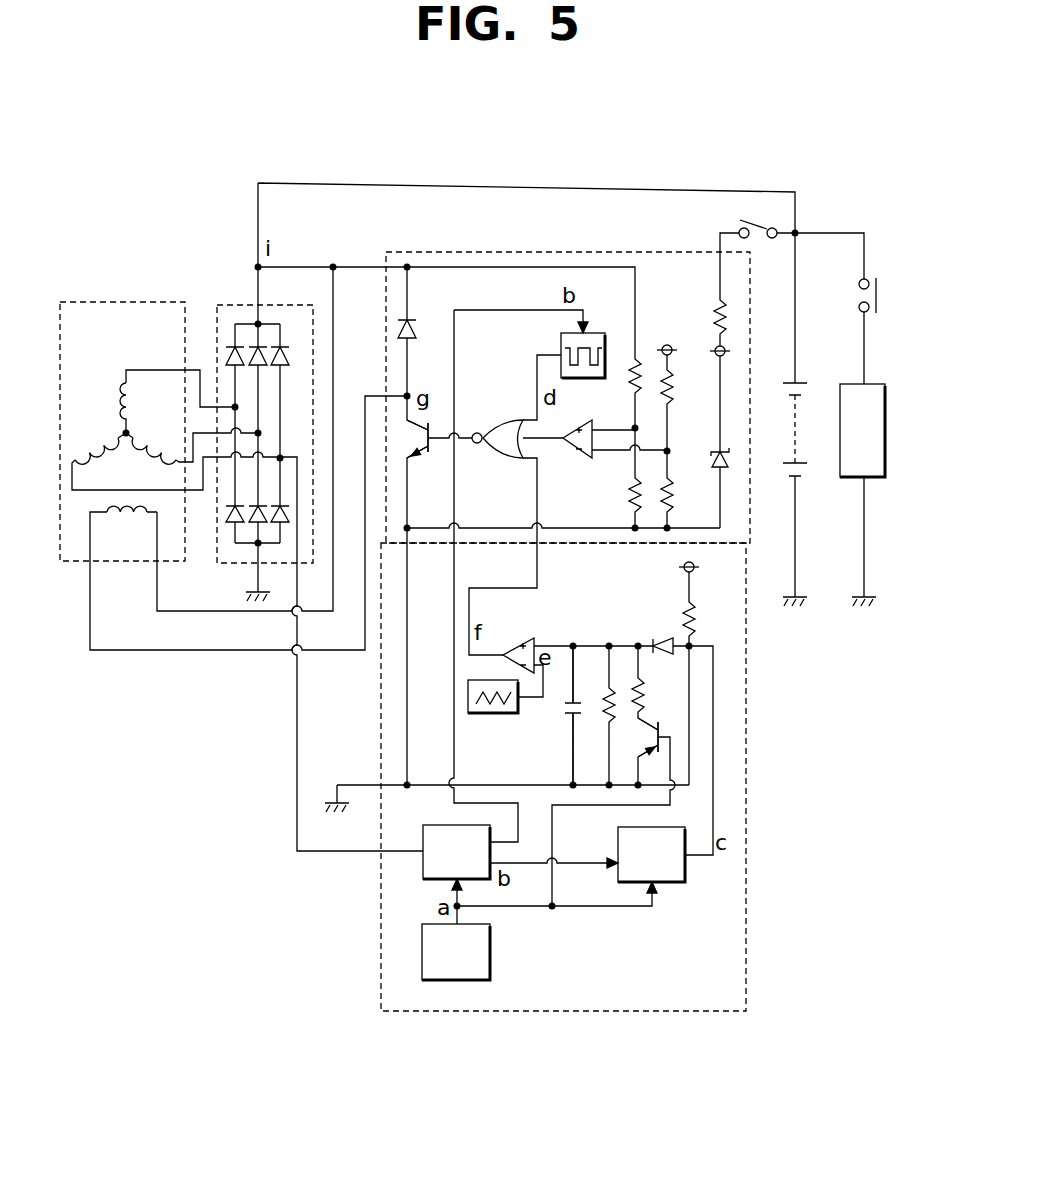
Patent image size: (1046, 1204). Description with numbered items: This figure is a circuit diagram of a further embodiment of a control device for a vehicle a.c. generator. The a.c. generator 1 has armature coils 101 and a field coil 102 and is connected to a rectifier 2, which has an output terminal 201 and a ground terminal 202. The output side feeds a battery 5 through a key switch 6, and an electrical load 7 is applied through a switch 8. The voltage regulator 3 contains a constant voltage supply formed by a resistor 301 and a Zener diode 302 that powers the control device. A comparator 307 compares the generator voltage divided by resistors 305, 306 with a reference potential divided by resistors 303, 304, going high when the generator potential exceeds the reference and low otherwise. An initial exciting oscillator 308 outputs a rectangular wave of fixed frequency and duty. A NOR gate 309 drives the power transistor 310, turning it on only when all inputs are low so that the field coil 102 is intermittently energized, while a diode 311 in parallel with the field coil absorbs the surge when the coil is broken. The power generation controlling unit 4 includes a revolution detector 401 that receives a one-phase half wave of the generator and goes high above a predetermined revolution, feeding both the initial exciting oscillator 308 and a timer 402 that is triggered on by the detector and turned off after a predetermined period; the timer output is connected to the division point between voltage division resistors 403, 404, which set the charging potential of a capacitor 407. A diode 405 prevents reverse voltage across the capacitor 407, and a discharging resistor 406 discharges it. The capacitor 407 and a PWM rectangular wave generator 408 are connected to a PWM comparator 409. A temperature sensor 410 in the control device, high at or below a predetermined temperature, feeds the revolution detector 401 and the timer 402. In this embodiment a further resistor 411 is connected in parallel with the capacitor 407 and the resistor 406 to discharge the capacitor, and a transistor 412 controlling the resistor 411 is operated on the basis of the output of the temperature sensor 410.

The a.c. generator 1 is at (108, 300).
The armature coils 101 is at (120, 388).
The field coil 102 is at (123, 518).
The rectifier 2 is at (226, 305).
The output terminal 201 is at (262, 318).
The ground terminal 202 is at (250, 548).
The voltage regulator 3 is at (530, 252).
The resistor 301 is at (717, 305).
The Zener diode 302 is at (713, 458).
The resistor 303 is at (670, 400).
The resistor 304 is at (672, 495).
The resistor 305 is at (625, 390).
The resistor 306 is at (620, 495).
The comparator 307 is at (567, 452).
The initial exciting oscillator 308 is at (561, 340).
The NOR gate 309 is at (500, 420).
The power transistor 310 is at (432, 450).
The diode 311 is at (417, 325).
The power generation controlling unit 4 is at (748, 665).
The revolution detector 401 is at (422, 840).
The timer 402 is at (665, 885).
The voltage division resistor 403 is at (680, 595).
The voltage division resistor 404 is at (694, 620).
The diode 405 is at (660, 638).
The discharging resistor 406 is at (600, 722).
The capacitor 407 is at (571, 648).
The PWM rectangular wave generator 408 is at (485, 715).
The PWM comparator 409 is at (527, 642).
The temperature sensor 410 is at (492, 950).
The resistor 411 is at (609, 670).
The transistor 412 is at (655, 730).
The battery 5 is at (803, 478).
The key switch 6 is at (738, 224).
The electrical load 7 is at (870, 480).
The switch 8 is at (878, 306).